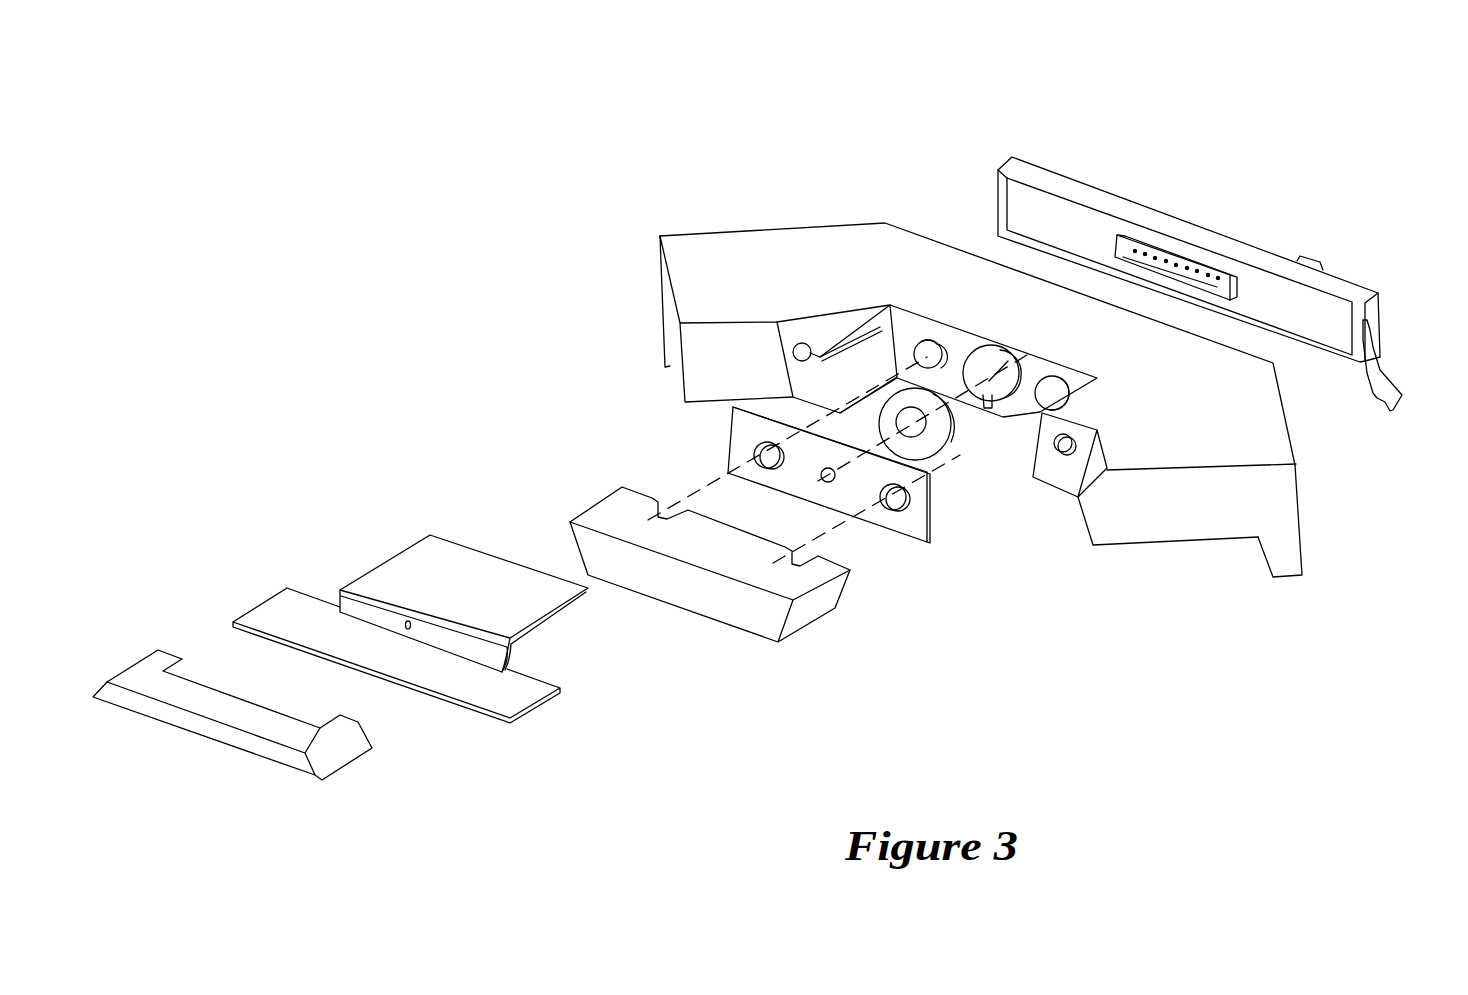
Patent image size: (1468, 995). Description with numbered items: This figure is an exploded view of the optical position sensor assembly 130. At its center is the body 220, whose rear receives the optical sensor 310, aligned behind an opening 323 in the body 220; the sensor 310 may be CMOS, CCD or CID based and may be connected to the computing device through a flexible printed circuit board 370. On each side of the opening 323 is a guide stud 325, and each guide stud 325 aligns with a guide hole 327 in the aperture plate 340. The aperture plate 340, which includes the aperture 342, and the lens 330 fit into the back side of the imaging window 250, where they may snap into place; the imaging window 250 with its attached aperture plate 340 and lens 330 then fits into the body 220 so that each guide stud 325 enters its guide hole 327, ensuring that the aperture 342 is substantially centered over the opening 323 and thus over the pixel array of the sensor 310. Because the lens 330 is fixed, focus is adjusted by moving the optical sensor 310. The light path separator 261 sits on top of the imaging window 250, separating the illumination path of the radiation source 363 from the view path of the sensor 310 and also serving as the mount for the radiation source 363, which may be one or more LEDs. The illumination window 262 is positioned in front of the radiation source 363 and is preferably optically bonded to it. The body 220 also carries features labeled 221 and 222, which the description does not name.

The optical position sensor assembly 130 is at (609, 92).
The body 220 is at (780, 272).
The front face of housing 221 is at (1157, 543).
The mounting leg 222 is at (1290, 562).
The imaging window 250 is at (792, 627).
The light path separator 261 is at (383, 573).
The illumination window 262 is at (127, 665).
The optical sensor 310 is at (1162, 232).
The opening 323 is at (998, 400).
The guide stud 325 is at (921, 341).
The guide hole 327 is at (755, 443).
The lens 330 is at (947, 436).
The aperture plate 340 is at (748, 501).
The aperture 342 is at (825, 482).
The radiation source 363 is at (408, 632).
The flexible printed circuit board 370 is at (1387, 383).